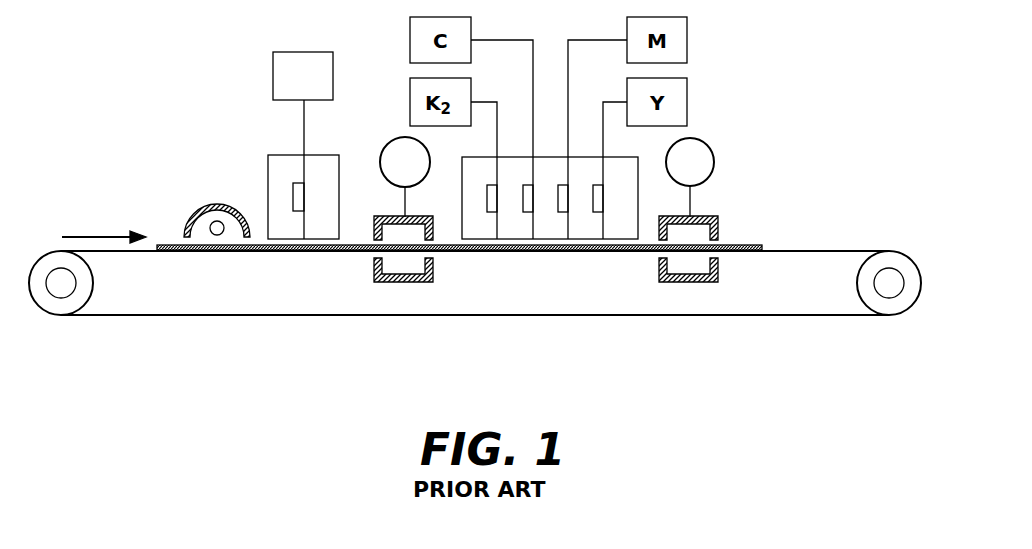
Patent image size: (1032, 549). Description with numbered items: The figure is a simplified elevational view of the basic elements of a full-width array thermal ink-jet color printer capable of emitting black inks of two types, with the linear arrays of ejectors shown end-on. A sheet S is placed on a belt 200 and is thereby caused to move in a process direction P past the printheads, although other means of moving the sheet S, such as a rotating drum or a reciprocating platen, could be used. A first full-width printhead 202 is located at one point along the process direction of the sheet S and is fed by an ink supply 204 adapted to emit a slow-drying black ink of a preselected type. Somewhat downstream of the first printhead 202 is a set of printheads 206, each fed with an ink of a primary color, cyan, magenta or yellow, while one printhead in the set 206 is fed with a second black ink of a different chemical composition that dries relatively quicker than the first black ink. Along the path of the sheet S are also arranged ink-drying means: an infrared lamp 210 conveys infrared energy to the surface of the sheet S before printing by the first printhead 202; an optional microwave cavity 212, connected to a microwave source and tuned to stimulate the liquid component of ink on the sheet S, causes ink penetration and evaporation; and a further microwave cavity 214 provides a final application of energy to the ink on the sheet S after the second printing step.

The belt 200 is at (552, 315).
The first full-width printhead 202 is at (283, 160).
The ink supply 204 is at (304, 52).
The set of printheads 206 is at (622, 227).
The infrared lamp 210 is at (210, 204).
The microwave cavity 212 is at (390, 217).
The further microwave cavity 214 is at (708, 217).
The sheet S is at (745, 245).
The process direction P is at (91, 237).